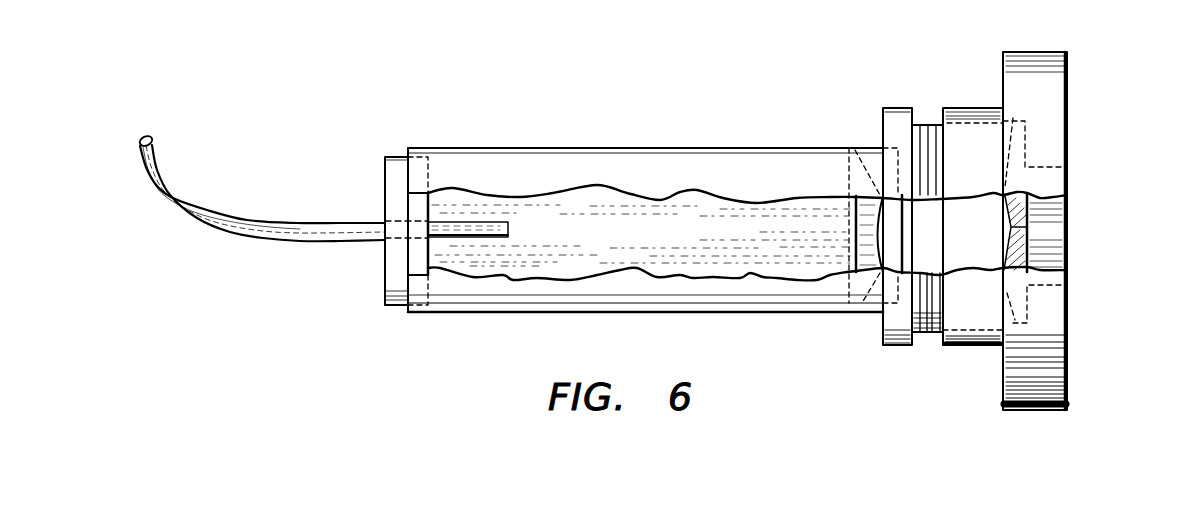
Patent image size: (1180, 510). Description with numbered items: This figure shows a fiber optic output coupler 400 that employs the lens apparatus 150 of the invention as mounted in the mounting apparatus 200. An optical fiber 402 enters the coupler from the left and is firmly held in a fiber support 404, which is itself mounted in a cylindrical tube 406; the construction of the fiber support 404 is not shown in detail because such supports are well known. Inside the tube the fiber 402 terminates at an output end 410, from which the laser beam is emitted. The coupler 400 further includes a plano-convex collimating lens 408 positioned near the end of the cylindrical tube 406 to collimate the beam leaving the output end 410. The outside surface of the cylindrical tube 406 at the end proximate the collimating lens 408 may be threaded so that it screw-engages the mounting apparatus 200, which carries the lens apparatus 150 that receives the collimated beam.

The lens apparatus 150 is at (1028, 248).
The mounting apparatus 200 is at (970, 347).
The fiber optic output coupler 400 is at (602, 223).
The optical fiber 402 is at (247, 219).
The fiber support 404 is at (385, 186).
The cylindrical tube 406 is at (687, 148).
The plano-convex collimating lens 408 is at (849, 235).
The output end 410 is at (510, 228).